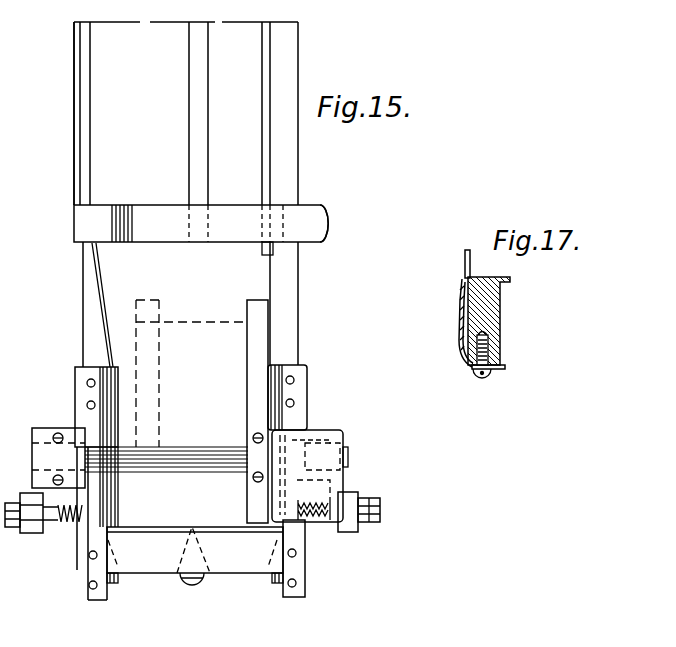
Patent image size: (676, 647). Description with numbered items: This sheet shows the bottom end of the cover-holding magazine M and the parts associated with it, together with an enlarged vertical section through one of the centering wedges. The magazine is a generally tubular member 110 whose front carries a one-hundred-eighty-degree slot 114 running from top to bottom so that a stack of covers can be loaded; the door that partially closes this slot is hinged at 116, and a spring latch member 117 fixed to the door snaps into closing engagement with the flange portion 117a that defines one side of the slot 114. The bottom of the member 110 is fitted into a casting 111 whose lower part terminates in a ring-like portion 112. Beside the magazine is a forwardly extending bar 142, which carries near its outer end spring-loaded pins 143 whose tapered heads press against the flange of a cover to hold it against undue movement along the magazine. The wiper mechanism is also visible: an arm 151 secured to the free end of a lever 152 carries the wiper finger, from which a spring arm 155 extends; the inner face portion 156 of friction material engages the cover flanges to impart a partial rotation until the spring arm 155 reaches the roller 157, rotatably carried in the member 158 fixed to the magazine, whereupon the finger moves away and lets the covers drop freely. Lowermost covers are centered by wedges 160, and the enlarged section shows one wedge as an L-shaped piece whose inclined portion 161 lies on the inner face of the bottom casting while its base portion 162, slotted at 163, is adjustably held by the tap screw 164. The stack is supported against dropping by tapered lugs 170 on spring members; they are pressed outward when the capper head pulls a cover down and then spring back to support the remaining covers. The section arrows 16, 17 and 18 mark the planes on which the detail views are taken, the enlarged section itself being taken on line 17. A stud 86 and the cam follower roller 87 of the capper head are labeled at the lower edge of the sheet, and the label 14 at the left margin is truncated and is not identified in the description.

In FIG. 15, the tubular member 110 is at (100, 122).
In FIG. 17, the tubular member 110 is at (465, 260).
In FIG. 15, the casting 111 is at (307, 375).
In FIG. 15, the ring-like portion 112 is at (328, 592).
In FIG. 17, the ring-like portion 112 is at (500, 315).
In FIG. 15, the slot 114 is at (112, 266).
In FIG. 15, the hinge 116 is at (72, 157).
In FIG. 15, the spring latch member 117 is at (153, 211).
In FIG. 15, the flange portion 117a is at (268, 178).
In FIG. 15, the bar 142 is at (355, 492).
In FIG. 15, the spring-loaded pin 143 is at (62, 524).
In FIG. 15, the adjusting screw 14 is at (35, 517).
In FIG. 15, the arm 151 is at (183, 457).
In FIG. 15, the lever 152 is at (48, 410).
In FIG. 15, the spring arm 155 is at (290, 442).
In FIG. 15, the inner face portion 156 is at (253, 338).
In FIG. 15, the roller 157 is at (348, 455).
In FIG. 15, the member 158 is at (343, 430).
In FIG. 15, the wedge 160 is at (176, 557).
In FIG. 17, the wedge 160 is at (453, 366).
In FIG. 17, the inclined portion 161 is at (460, 328).
In FIG. 17, the base portion 162 is at (498, 365).
In FIG. 17, the slot 163 is at (495, 370).
In FIG. 17, the tap screw 164 is at (482, 378).
In FIG. 15, the tapered lug 170 is at (113, 578).
In FIG. 15, the section line 16 is at (67, 91).
In FIG. 15, the section line 17 is at (243, 393).
In FIG. 15, the section line 18 is at (315, 555).
In FIG. 15, the cam follower roller 87 is at (297, 646).
In FIG. 15, the stud 86 is at (346, 638).